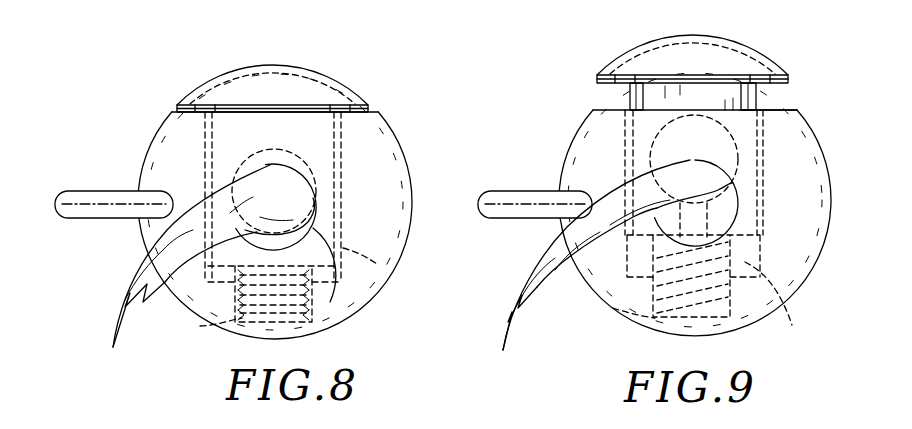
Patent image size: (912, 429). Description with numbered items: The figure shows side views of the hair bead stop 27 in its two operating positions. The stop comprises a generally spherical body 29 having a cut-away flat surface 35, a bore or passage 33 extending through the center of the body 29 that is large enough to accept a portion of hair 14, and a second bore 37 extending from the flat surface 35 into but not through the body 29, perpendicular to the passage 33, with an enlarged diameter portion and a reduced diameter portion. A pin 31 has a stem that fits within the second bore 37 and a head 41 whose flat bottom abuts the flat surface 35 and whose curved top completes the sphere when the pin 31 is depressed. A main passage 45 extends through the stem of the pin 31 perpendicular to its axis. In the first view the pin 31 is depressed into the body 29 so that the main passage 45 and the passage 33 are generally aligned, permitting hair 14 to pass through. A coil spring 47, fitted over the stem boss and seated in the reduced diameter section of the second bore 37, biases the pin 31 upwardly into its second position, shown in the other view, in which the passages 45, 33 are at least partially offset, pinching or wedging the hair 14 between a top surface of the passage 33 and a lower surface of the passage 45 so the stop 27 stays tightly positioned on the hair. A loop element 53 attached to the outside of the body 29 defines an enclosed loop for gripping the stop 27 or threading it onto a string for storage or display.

In FIG. 8, the hair 14 is at (128, 291).
In FIG. 9, the hair 14 is at (524, 284).
In FIG. 8, the hair bead stop 27 is at (147, 98).
In FIG. 9, the hair bead stop 27 is at (792, 61).
In FIG. 8, the body 29 is at (400, 112).
In FIG. 9, the body 29 is at (827, 163).
In FIG. 9, the pin 31 is at (624, 98).
In FIG. 8, the bore or passage 33 is at (330, 302).
In FIG. 9, the flat surface 35 is at (770, 110).
In FIG. 8, the second bore 37 is at (377, 264).
In FIG. 9, the second bore 37 is at (720, 228).
In FIG. 8, the head 41 is at (292, 85).
In FIG. 9, the head 41 is at (740, 56).
In FIG. 8, the main passage 45 is at (245, 157).
In FIG. 8, the spring 47 is at (200, 326).
In FIG. 9, the spring 47 is at (613, 308).
In FIG. 8, the loop element 53 is at (78, 200).
In FIG. 9, the loop element 53 is at (500, 200).